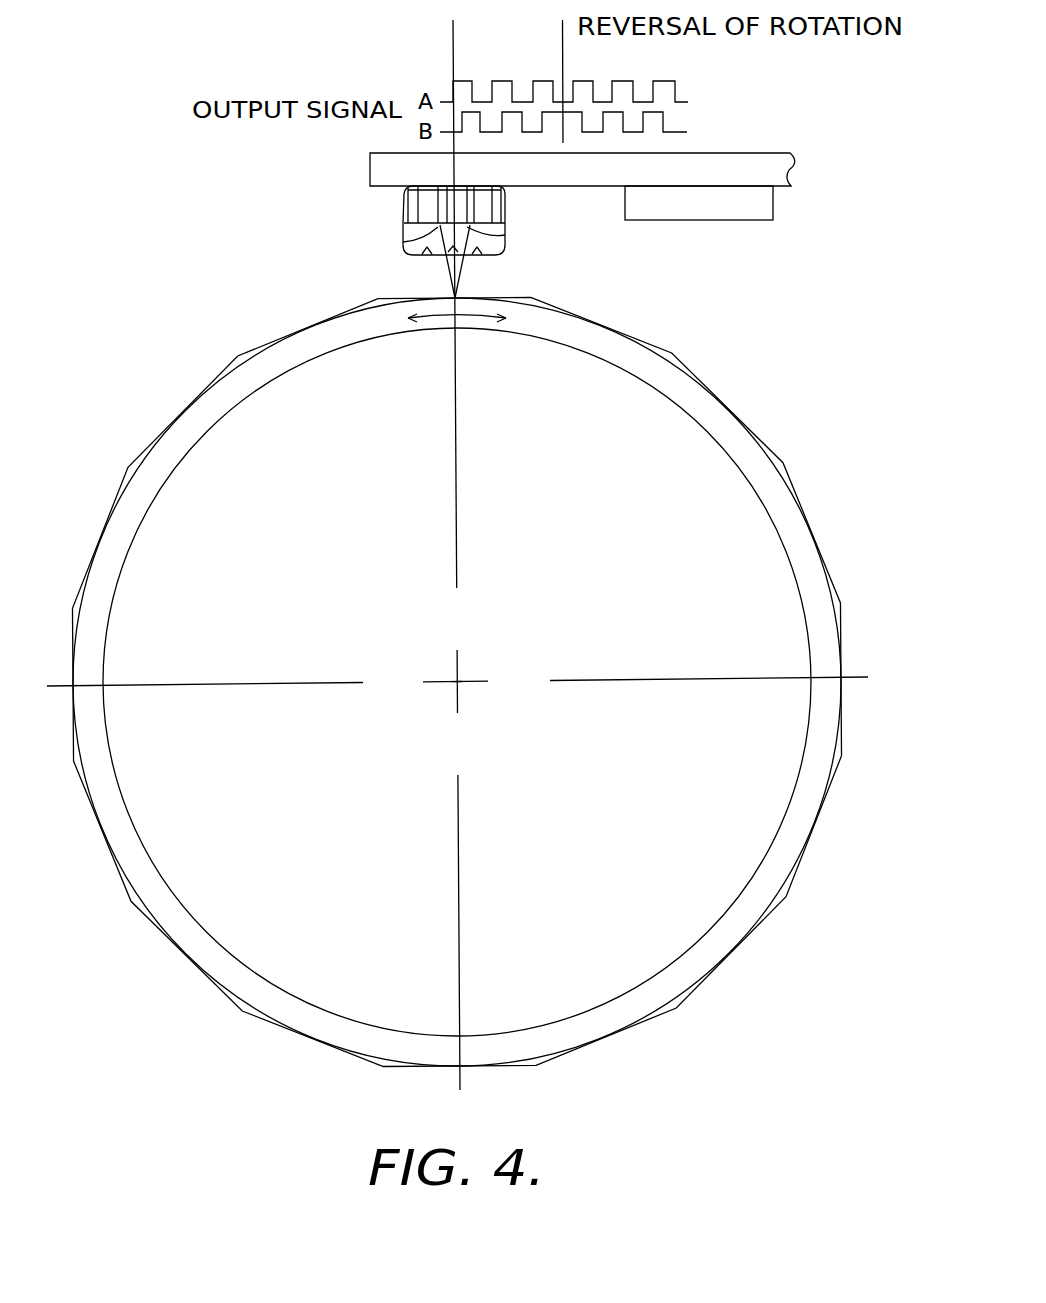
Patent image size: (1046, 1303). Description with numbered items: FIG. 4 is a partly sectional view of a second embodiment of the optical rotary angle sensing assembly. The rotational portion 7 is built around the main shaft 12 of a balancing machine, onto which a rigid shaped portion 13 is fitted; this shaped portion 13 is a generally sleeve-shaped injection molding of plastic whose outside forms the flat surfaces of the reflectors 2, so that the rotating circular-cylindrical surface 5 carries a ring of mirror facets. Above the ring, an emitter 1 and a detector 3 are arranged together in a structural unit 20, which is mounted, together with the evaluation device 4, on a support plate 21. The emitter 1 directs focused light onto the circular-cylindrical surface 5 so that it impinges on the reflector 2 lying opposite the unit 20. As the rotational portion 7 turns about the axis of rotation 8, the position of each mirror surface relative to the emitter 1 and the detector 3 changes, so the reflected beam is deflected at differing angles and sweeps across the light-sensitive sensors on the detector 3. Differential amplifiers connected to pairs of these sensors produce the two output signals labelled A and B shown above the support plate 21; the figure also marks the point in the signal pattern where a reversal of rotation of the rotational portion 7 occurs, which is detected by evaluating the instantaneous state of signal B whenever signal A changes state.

The emitter 1 is at (403, 241).
The reflector 2 is at (622, 318).
The detector 3 is at (506, 231).
The evaluation device 4 is at (703, 221).
The circular-cylindrical surface 5 is at (374, 304).
The rotational portion 7 is at (570, 460).
The axis of rotation 8 is at (457, 682).
The main shaft 12 is at (455, 681).
The shaped portion 13 is at (724, 417).
The structural unit 20 is at (403, 206).
The support plate 21 is at (708, 157).